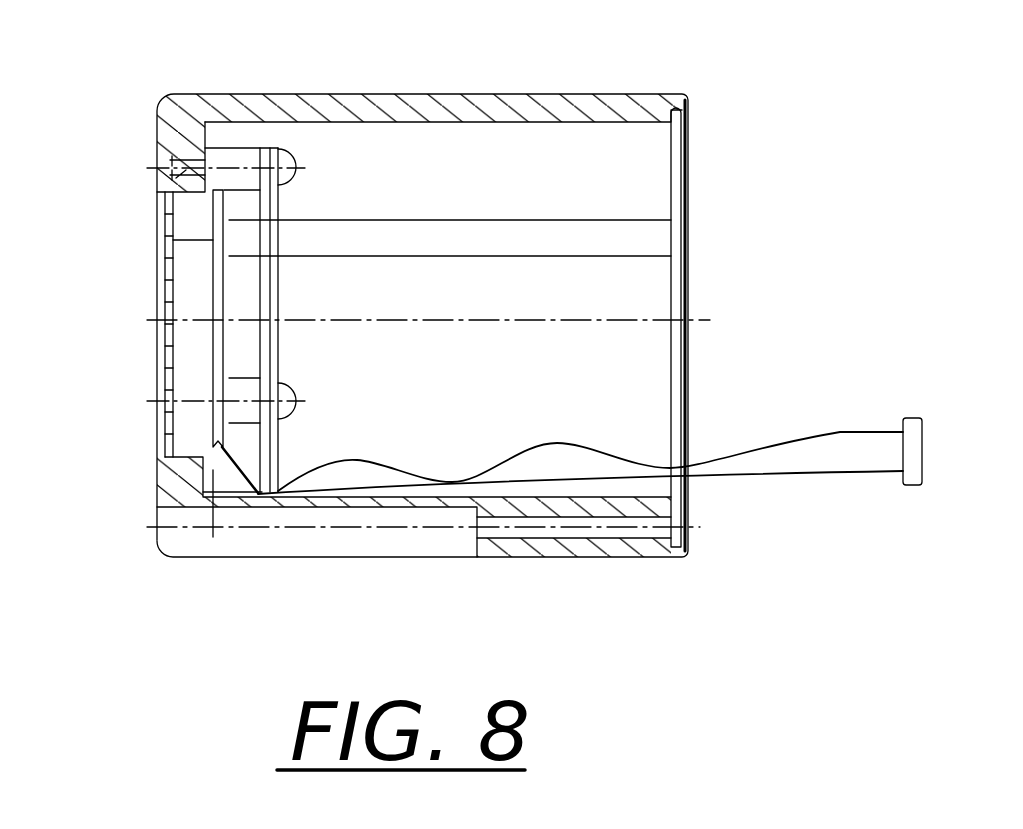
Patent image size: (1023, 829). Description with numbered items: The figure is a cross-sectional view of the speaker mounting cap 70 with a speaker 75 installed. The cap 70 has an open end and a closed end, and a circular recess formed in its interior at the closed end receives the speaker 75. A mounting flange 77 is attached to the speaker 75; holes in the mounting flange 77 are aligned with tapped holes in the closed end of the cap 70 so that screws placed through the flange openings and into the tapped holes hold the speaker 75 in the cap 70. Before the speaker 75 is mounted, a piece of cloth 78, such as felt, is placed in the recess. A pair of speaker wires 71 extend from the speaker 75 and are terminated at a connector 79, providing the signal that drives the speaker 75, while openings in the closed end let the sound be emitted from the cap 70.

The speaker mounting cap 70 is at (486, 86).
The speaker wires 71 is at (818, 475).
The speaker 75 is at (226, 190).
The mounting flange 77 is at (272, 197).
The piece of cloth 78 is at (151, 458).
The connector 79 is at (913, 417).